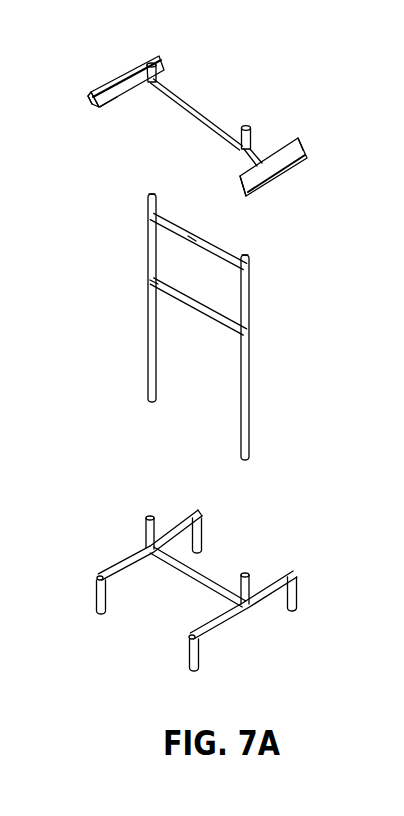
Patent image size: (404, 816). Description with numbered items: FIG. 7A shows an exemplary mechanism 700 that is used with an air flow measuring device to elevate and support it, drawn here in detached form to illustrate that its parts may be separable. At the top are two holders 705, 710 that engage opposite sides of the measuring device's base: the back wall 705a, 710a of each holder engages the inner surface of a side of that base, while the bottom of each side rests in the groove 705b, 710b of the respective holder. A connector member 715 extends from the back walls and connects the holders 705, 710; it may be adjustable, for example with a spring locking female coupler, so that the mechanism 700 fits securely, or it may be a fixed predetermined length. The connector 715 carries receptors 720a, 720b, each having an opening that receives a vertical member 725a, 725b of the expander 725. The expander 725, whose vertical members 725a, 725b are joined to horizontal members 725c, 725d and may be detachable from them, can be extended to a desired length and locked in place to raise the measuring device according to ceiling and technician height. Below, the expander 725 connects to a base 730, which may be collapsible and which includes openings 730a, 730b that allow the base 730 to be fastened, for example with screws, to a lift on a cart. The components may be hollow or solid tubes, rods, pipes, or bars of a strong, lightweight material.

The mechanism 700 is at (308, 45).
The holder 705 is at (304, 147).
The back wall 705a is at (236, 181).
The groove 705b is at (240, 187).
The holder 710 is at (137, 54).
The back wall 710a is at (117, 96).
The groove 710b is at (90, 103).
The connector member 715 is at (192, 106).
The receptor 720a is at (247, 126).
The receptor 720b is at (153, 77).
The expander 725 is at (268, 336).
The vertical member 725a is at (246, 257).
The vertical member 725b is at (147, 197).
The horizontal member 725c is at (190, 246).
The horizontal member 725d is at (153, 281).
The base 730 is at (257, 524).
The opening 730a is at (97, 579).
The opening 730b is at (190, 637).